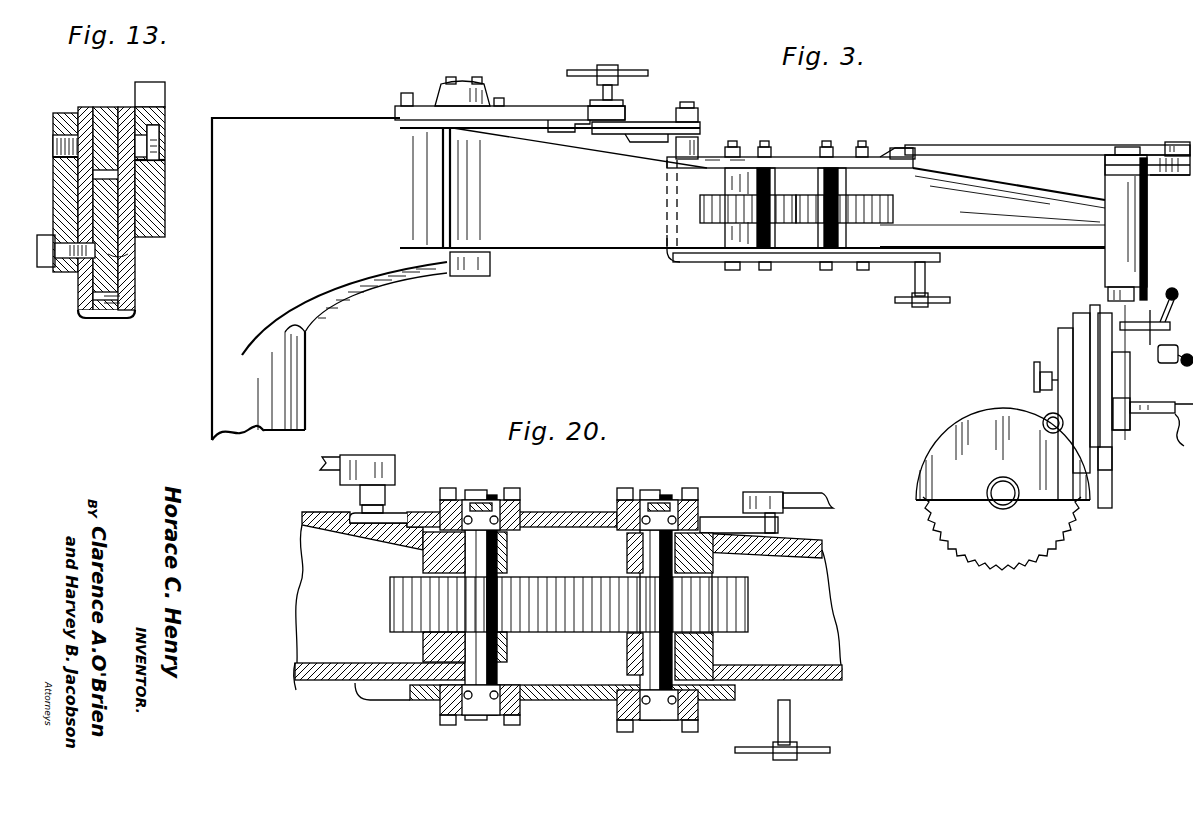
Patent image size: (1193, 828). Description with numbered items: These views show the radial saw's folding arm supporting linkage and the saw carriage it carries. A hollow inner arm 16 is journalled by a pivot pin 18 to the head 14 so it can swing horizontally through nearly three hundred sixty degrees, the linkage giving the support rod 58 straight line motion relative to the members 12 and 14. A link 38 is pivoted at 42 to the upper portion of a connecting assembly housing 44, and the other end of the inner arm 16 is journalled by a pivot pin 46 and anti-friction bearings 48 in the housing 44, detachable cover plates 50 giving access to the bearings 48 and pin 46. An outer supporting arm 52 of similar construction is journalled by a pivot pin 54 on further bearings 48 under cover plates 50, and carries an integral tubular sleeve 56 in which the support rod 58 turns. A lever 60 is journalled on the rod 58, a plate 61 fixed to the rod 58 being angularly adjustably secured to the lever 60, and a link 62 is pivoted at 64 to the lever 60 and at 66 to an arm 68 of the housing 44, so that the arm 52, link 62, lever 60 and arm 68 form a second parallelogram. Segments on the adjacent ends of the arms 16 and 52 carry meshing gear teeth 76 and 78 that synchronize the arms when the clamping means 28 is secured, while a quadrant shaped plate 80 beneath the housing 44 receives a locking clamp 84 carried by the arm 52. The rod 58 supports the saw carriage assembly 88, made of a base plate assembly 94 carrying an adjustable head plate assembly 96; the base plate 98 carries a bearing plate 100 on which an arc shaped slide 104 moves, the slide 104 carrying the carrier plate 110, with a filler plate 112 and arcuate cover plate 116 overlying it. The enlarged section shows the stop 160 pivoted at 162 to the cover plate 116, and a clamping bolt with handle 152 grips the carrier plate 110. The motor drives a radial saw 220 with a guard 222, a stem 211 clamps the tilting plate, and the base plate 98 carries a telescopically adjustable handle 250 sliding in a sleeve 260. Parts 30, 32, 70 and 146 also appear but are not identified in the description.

In FIG. 3, the member 12 is at (282, 397).
In FIG. 3, the head 14 is at (352, 134).
In FIG. 3, the inner arm 16 is at (590, 232).
In FIG. 20, the inner arm 16 is at (298, 684).
In FIG. 3, the pivot pin 18 is at (468, 248).
In FIG. 3, the clamping means 28 is at (613, 92).
In FIG. 3, the stepped bracket 30 is at (573, 132).
In FIG. 3, the cap plate 32 is at (530, 122).
In FIG. 3, the link 38 is at (656, 128).
In FIG. 20, the link 38 is at (338, 465).
In FIG. 3, the pivot 42 is at (690, 118).
In FIG. 20, the pivot 42 is at (392, 488).
In FIG. 3, the connecting assembly housing 44 is at (793, 157).
In FIG. 20, the connecting assembly housing 44 is at (545, 512).
In FIG. 20, the pivot pin 46 is at (500, 665).
In FIG. 20, the anti-friction bearings 48 is at (474, 503).
In FIG. 20, the detachable cover plates 50 is at (458, 490).
In FIG. 3, the outer supporting arm 52 is at (1030, 228).
In FIG. 20, the outer supporting arm 52 is at (828, 675).
In FIG. 20, the pivot pin 54 is at (628, 556).
In FIG. 3, the tubular bushing or sleeve 56 is at (1128, 246).
In FIG. 3, the support rod 58 is at (1122, 149).
In FIG. 3, the link or lever 60 is at (1150, 155).
In FIG. 3, the plate 61 is at (1163, 176).
In FIG. 3, the link 62 is at (1036, 150).
In FIG. 20, the link 62 is at (805, 493).
In FIG. 3, the pivot 64 is at (1178, 143).
In FIG. 3, the pivot 66 is at (915, 159).
In FIG. 3, the arm 68 is at (882, 157).
In FIG. 20, the arm 68 is at (717, 517).
In FIG. 20, the bolt 70 is at (758, 492).
In FIG. 3, the gear teeth 76 is at (770, 212).
In FIG. 20, the gear teeth 76 is at (520, 586).
In FIG. 3, the gear teeth 78 is at (868, 208).
In FIG. 20, the gear teeth 78 is at (735, 586).
In FIG. 3, the quadrant shaped plate 80 is at (884, 262).
In FIG. 20, the quadrant shaped plate 80 is at (750, 701).
In FIG. 3, the locking bolt or clamp 84 is at (930, 285).
In FIG. 20, the locking bolt or clamp 84 is at (792, 740).
In FIG. 3, the saw carriage assembly 88 is at (1140, 395).
In FIG. 3, the base plate assembly 94 is at (1127, 464).
In FIG. 3, the head plate assembly 96 is at (1049, 349).
In FIG. 13, the base plate 98 is at (70, 113).
In FIG. 13, the bearing plate 100 is at (103, 314).
In FIG. 13, the slide 104 is at (126, 256).
In FIG. 13, the support plate 110 is at (130, 292).
In FIG. 13, the spacer or filler plate 112 is at (104, 120).
In FIG. 13, the cover plate 116 is at (124, 110).
In FIG. 3, the lever boss 146 is at (1165, 345).
In FIG. 3, the handle 152 is at (1143, 312).
In FIG. 13, the stop 160 is at (157, 190).
In FIG. 13, the pivot 162 is at (160, 140).
In FIG. 3, the extending stem 211 is at (1040, 374).
In FIG. 3, the radial saw 220 is at (1002, 548).
In FIG. 3, the guard or shield 222 is at (955, 440).
In FIG. 3, the telescopically adjustable handle 250 is at (1182, 444).
In FIG. 3, the sleeve 260 is at (1153, 414).